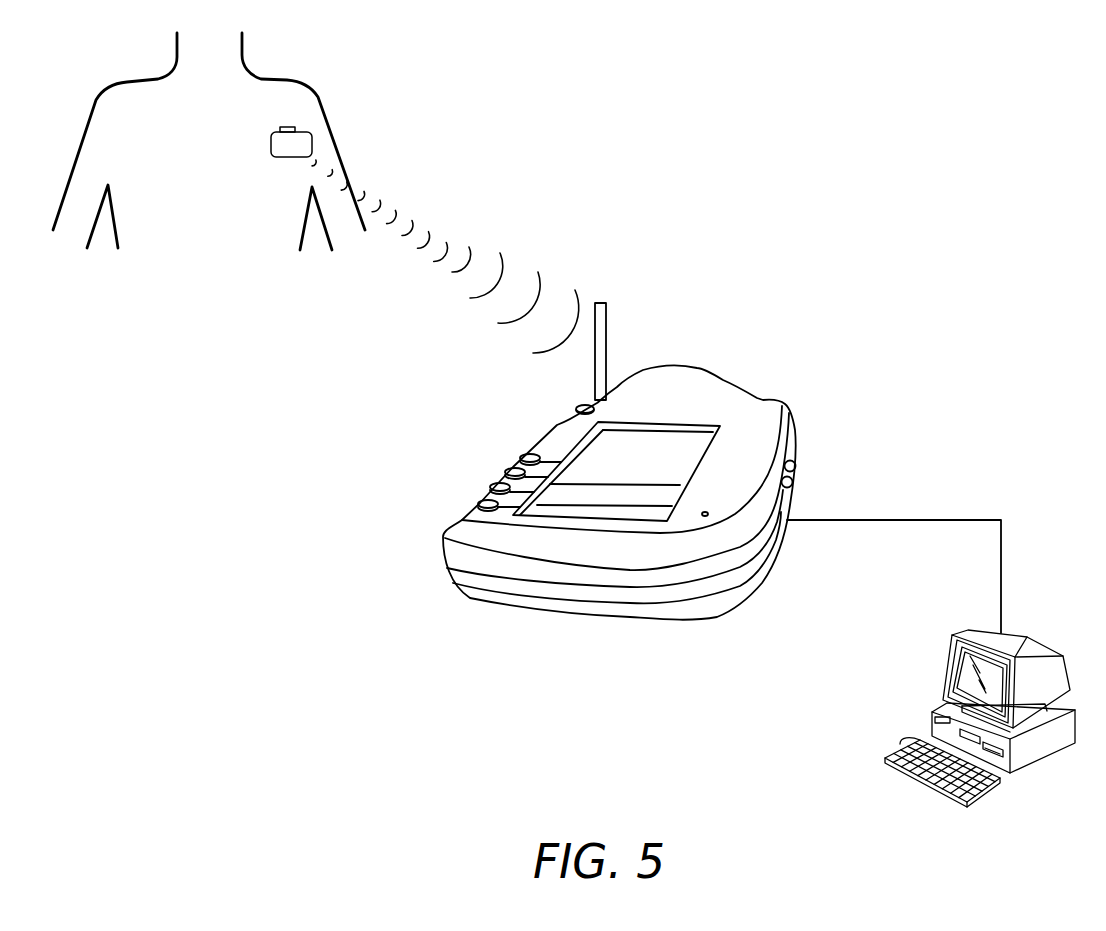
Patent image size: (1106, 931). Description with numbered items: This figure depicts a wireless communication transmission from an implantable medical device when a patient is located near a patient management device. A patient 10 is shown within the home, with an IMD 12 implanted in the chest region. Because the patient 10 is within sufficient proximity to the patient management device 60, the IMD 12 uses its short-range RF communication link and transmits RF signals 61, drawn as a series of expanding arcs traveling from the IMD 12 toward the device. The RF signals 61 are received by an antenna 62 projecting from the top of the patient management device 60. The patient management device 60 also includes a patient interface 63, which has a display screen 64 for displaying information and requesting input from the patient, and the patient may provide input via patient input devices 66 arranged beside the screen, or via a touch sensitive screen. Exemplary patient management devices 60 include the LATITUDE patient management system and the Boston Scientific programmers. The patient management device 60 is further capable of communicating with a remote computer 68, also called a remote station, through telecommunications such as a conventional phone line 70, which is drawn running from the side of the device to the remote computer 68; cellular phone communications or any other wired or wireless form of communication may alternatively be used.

The patient 10 is at (319, 97).
The implantable medical device 12 is at (281, 133).
The patient management device 60 is at (757, 399).
The RF signals 61 is at (536, 280).
The antenna 62 is at (607, 338).
The patient interface 63 is at (707, 453).
The display screen 64 is at (677, 485).
The patient input devices 66 is at (531, 454).
The remote computer 68 is at (1045, 640).
The phone line 70 is at (1002, 548).